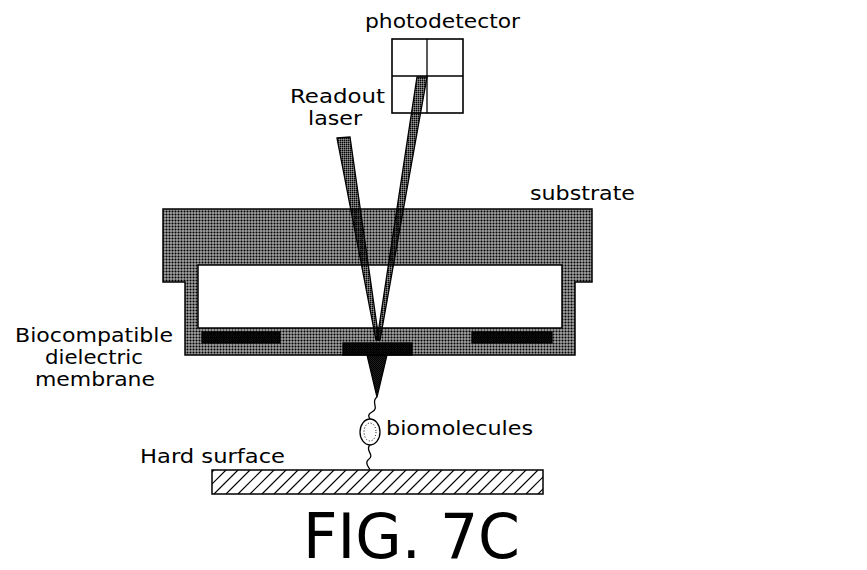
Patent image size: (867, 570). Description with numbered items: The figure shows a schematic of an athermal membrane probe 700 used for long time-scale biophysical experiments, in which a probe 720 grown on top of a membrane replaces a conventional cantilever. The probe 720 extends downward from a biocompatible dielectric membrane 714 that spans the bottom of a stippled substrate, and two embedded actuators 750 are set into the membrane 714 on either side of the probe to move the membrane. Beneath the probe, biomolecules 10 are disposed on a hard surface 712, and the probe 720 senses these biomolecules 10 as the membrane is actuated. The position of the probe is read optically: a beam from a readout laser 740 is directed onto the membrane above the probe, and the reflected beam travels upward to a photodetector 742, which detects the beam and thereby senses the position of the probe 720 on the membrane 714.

The athermal membrane probe 700 is at (148, 221).
The readout laser 740 is at (337, 150).
The photodetector 742 is at (463, 93).
The embedded actuators 750 is at (251, 331).
The biocompatible dielectric membrane 714 is at (333, 356).
The probe 720 is at (386, 372).
The biomolecules 10 is at (360, 429).
The hard surface 712 is at (445, 471).